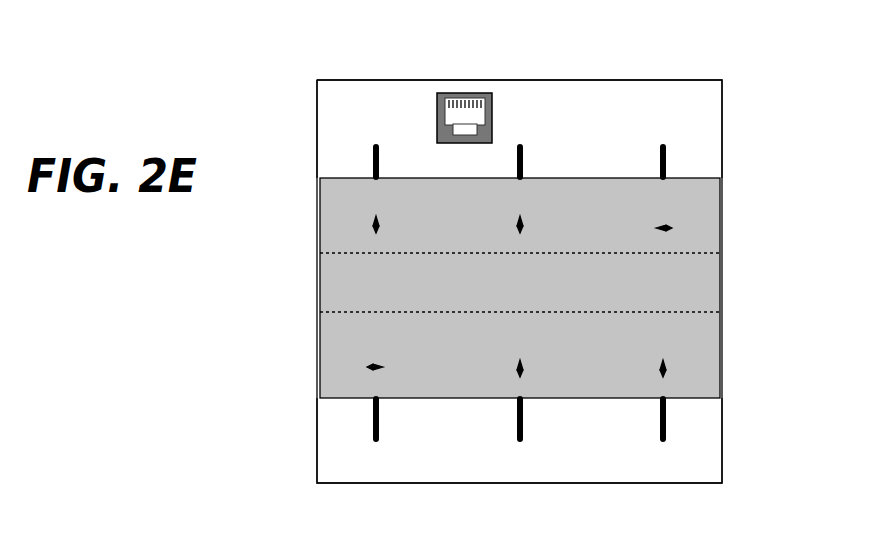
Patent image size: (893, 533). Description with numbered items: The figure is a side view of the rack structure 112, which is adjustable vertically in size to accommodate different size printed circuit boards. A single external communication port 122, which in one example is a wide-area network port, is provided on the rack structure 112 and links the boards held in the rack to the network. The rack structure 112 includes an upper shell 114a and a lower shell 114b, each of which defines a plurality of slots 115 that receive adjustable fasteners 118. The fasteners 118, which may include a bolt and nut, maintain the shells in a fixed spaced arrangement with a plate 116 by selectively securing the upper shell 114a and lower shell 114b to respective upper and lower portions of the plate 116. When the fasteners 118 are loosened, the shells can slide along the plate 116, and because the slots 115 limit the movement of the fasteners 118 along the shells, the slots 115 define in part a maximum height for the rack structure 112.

The rack structure 112 is at (246, 83).
The upper shell 114a is at (647, 100).
The lower shell 114b is at (683, 443).
The slots 115 is at (372, 165).
The plate 116 is at (692, 298).
The adjustable fasteners 118 is at (376, 226).
The external communication port 122 is at (443, 97).